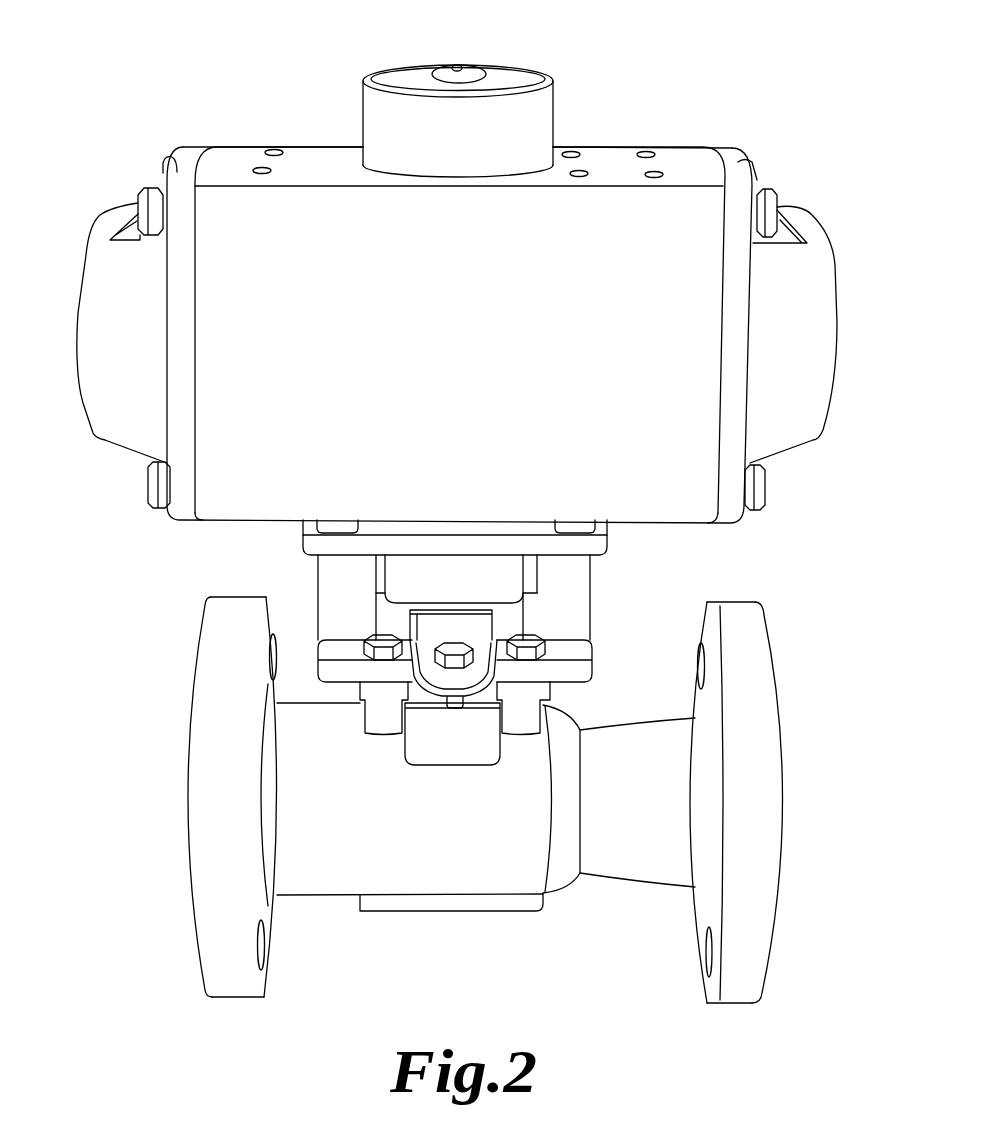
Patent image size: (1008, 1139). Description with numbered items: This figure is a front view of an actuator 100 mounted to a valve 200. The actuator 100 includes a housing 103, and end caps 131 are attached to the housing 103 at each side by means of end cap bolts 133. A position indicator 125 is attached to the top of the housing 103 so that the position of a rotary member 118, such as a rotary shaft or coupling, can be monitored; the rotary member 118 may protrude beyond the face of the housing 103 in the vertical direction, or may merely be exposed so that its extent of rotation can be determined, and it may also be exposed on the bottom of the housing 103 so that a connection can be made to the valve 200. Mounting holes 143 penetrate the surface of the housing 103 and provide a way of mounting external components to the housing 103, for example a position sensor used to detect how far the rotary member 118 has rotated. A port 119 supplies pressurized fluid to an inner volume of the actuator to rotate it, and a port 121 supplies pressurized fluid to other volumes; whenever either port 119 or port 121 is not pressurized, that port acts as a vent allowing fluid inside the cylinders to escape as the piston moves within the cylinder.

The actuator 100 is at (287, 95).
The housing 103 is at (683, 148).
The rotary member 118 is at (456, 67).
The port 119 is at (572, 151).
The port 121 is at (580, 171).
The position indicator 125 is at (547, 82).
The end caps 131 is at (78, 283).
The end cap bolts 133 is at (152, 190).
The mounting holes 143 is at (272, 151).
The valve 200 is at (228, 990).